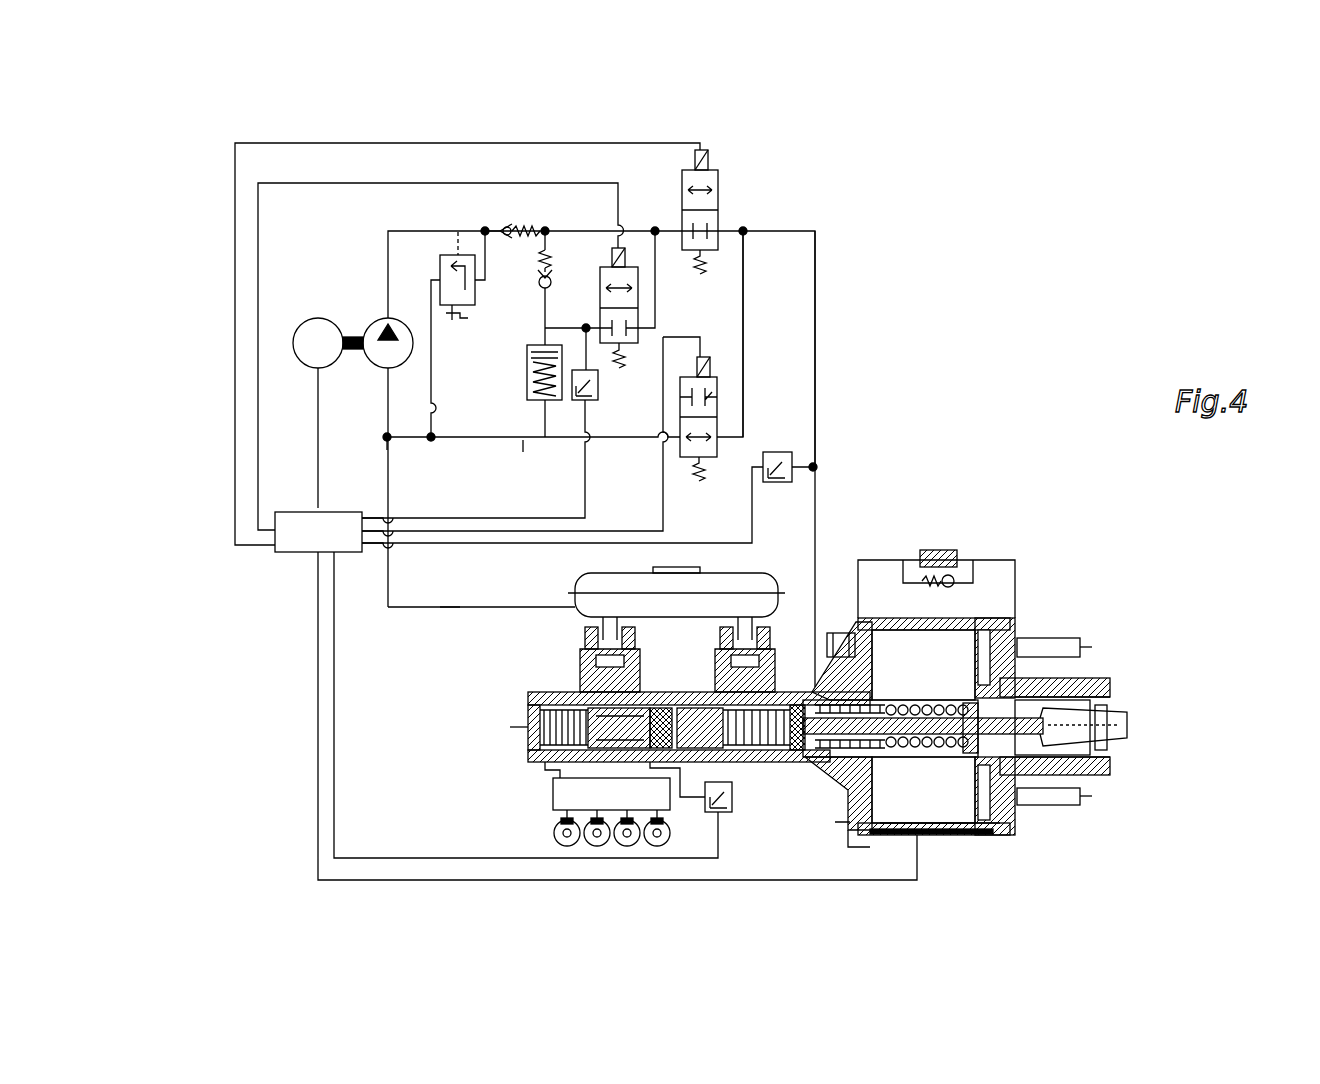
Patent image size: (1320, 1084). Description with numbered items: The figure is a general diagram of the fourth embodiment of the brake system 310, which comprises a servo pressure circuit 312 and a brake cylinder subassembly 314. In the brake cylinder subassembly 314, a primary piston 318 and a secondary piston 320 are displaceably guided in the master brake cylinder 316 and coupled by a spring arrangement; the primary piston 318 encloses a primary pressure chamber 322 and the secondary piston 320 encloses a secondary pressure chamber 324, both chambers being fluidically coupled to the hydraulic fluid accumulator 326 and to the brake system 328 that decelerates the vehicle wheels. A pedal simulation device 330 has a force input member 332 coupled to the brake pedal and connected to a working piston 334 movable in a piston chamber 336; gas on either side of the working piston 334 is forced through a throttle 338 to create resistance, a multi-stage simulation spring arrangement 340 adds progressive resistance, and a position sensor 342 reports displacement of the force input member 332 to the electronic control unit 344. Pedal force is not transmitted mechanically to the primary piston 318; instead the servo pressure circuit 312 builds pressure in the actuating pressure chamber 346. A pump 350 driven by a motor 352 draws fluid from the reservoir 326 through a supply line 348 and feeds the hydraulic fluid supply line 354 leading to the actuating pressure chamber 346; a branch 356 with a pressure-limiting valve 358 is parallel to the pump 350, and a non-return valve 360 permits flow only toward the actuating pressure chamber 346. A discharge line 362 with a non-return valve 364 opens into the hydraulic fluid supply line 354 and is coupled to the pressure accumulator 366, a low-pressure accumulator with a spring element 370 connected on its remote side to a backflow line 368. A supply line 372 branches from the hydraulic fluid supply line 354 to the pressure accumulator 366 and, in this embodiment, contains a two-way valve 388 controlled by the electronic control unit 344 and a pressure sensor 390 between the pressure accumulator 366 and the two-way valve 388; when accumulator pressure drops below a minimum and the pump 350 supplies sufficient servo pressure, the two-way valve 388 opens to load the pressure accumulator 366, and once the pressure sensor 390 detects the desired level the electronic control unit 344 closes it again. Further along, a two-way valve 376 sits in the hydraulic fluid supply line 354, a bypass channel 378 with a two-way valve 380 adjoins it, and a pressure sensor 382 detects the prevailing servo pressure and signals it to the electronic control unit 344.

The brake system 310 is at (1131, 388).
The servo pressure circuit 312 is at (840, 206).
The brake cylinder subassembly 314 is at (1112, 684).
The master brake cylinder 316 is at (763, 762).
The primary piston 318 is at (797, 765).
The secondary piston 320 is at (657, 745).
The primary pressure chamber 322 is at (693, 745).
The secondary pressure chamber 324 is at (542, 745).
The hydraulic fluid accumulator 326 is at (765, 577).
The brake system 328 is at (560, 846).
The pedal simulation device 330 is at (1013, 829).
The force input member 332 is at (1118, 722).
The working piston 334 is at (985, 657).
The piston chamber 336 is at (942, 637).
The throttle 338 is at (938, 548).
The simulation spring arrangement 340 is at (946, 758).
The position sensor 342 is at (933, 835).
The electronic control unit 344 is at (290, 552).
The actuating pressure chamber 346 is at (812, 690).
The supply line 348 is at (523, 450).
The pump 350 is at (380, 370).
The motor 352 is at (305, 372).
The hydraulic fluid supply line 354 is at (815, 288).
The branch 356 is at (385, 440).
The pressure-limiting valve 358 is at (440, 292).
The non-return valve 360 is at (524, 228).
The discharge line 362 is at (487, 228).
The non-return valve 364 is at (550, 262).
The pressure accumulator 366 is at (527, 403).
The backflow line 368 is at (447, 610).
The spring element 370 is at (527, 383).
The supply line 372 is at (800, 316).
The two-way valve 376 is at (716, 178).
The bypass channel 378 is at (800, 252).
The two-way valve 380 is at (800, 376).
The pressure sensor 382 is at (800, 443).
The two-way valve 388 is at (637, 270).
The pressure sensor 390 is at (578, 326).